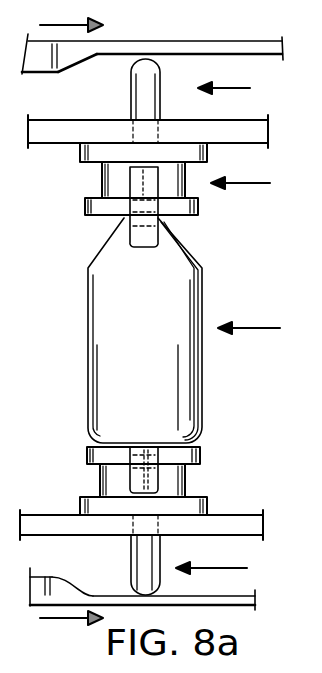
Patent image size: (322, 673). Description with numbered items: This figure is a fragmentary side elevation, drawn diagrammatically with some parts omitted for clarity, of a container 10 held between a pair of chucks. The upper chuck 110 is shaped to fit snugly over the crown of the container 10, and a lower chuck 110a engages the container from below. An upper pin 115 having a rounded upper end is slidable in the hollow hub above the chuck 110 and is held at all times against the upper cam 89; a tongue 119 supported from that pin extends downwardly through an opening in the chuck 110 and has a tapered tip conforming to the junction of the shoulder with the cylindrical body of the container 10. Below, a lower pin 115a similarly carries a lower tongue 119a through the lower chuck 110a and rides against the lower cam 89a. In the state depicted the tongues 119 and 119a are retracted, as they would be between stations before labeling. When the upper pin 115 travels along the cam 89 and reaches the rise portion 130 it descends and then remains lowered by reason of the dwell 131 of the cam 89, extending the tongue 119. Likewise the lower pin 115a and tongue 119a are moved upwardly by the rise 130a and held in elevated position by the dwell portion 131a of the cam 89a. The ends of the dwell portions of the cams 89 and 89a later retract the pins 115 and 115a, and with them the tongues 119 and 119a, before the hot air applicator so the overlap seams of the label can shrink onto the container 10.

The container 10 is at (178, 302).
The cam 89 is at (222, 50).
The cam 89a is at (228, 602).
The chuck 110 is at (100, 212).
The chuck 110a is at (86, 450).
The pin 115 is at (146, 102).
The pin 115a is at (146, 562).
The tongue 119 is at (160, 229).
The tongue 119a is at (146, 480).
The rise portion 130 is at (78, 64).
The rise 130a is at (76, 591).
The dwell 131 is at (29, 72).
The dwell portion 131a is at (40, 577).